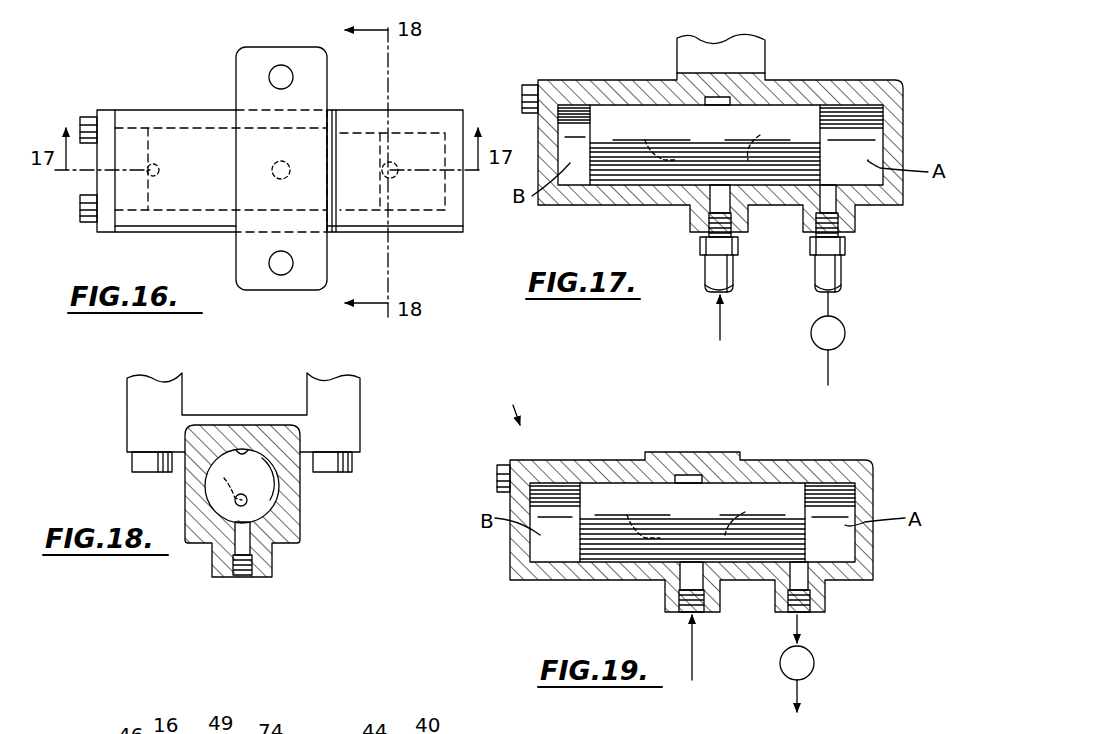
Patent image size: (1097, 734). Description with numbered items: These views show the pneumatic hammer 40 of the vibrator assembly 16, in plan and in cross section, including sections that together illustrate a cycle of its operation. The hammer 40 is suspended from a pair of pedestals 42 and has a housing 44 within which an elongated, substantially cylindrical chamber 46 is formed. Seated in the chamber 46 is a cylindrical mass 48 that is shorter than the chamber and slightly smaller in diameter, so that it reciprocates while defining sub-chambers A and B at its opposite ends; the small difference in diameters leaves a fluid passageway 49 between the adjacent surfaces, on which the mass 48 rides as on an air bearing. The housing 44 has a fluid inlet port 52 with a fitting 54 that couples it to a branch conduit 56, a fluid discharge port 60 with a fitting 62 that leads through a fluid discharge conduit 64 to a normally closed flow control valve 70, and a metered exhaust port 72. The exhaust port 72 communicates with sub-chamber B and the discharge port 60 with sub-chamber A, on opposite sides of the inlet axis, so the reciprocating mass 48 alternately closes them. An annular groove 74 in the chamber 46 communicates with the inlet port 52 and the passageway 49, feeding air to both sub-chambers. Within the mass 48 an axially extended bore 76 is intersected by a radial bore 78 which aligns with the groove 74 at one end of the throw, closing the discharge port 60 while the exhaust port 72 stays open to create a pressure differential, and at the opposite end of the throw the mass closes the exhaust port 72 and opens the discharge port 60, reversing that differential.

In FIG. 16, the vibrator assembly 16 is at (143, 98).
In FIG. 17, the vibrator assembly 16 is at (598, 76).
In FIG. 19, the vibrator assembly 16 is at (600, 450).
In FIG. 16, the pneumatic hammer 40 is at (271, 164).
In FIG. 17, the pneumatic hammer 40 is at (727, 196).
In FIG. 19, the pneumatic hammer 40 is at (691, 553).
In FIG. 16, the pedestals 42 is at (281, 168).
In FIG. 17, the pedestals 42 is at (740, 55).
In FIG. 18, the pedestals 42 is at (137, 390).
In FIG. 16, the housing 44 is at (410, 118).
In FIG. 17, the housing 44 is at (897, 110).
In FIG. 18, the housing 44 is at (293, 497).
In FIG. 19, the housing 44 is at (762, 468).
In FIG. 17, the chamber 46 is at (845, 118).
In FIG. 18, the chamber 46 is at (230, 449).
In FIG. 19, the chamber 46 is at (845, 560).
In FIG. 16, the mass 48 is at (197, 128).
In FIG. 17, the mass 48 is at (698, 136).
In FIG. 18, the mass 48 is at (270, 527).
In FIG. 19, the mass 48 is at (678, 516).
In FIG. 17, the fluid passageway 49 is at (618, 105).
In FIG. 18, the fluid passageway 49 is at (213, 440).
In FIG. 19, the fluid passageway 49 is at (628, 482).
In FIG. 17, the fluid inlet port 52 is at (712, 205).
In FIG. 19, the fluid inlet port 52 is at (688, 585).
In FIG. 17, the fitting 54 is at (700, 246).
In FIG. 17, the branch conduit 56 is at (710, 270).
In FIG. 17, the fluid discharge port 60 is at (832, 200).
In FIG. 18, the fluid discharge port 60 is at (240, 540).
In FIG. 19, the fluid discharge port 60 is at (795, 585).
In FIG. 17, the fitting 62 is at (845, 248).
In FIG. 17, the fluid discharge conduit 64 is at (838, 276).
In FIG. 19, the fluid discharge conduit 64 is at (792, 682).
In FIG. 17, the flow control valve 70 is at (843, 350).
In FIG. 19, the flow control valve 70 is at (812, 688).
In FIG. 17, the metered exhaust port 72 is at (593, 205).
In FIG. 19, the metered exhaust port 72 is at (570, 580).
In FIG. 17, the annular groove 74 is at (717, 97).
In FIG. 19, the annular groove 74 is at (688, 475).
In FIG. 17, the axially extended bore 76 is at (765, 134).
In FIG. 18, the axially extended bore 76 is at (255, 483).
In FIG. 19, the axially extended bore 76 is at (746, 512).
In FIG. 17, the radial bore 78 is at (646, 136).
In FIG. 18, the radial bore 78 is at (227, 475).
In FIG. 19, the radial bore 78 is at (630, 515).